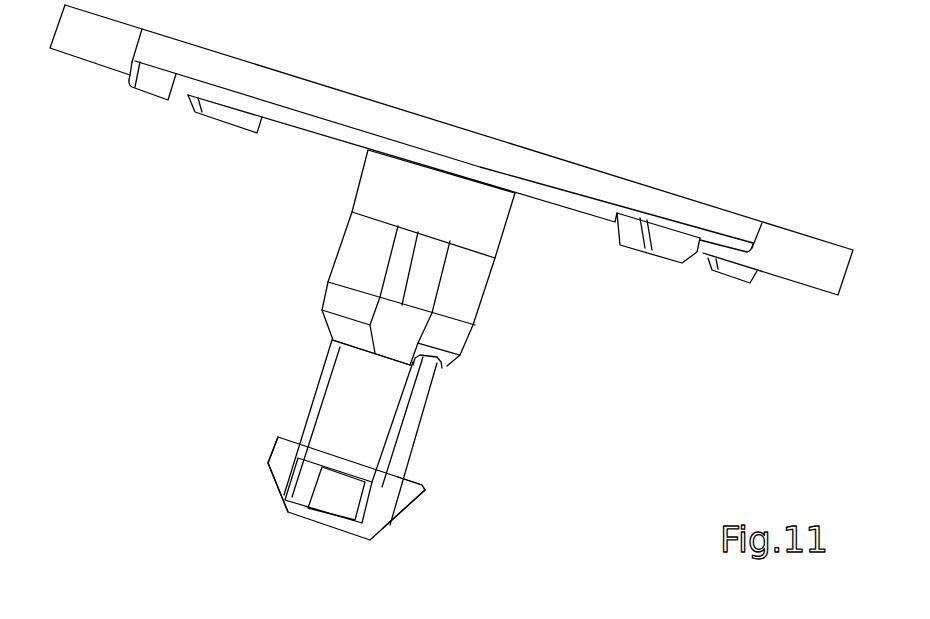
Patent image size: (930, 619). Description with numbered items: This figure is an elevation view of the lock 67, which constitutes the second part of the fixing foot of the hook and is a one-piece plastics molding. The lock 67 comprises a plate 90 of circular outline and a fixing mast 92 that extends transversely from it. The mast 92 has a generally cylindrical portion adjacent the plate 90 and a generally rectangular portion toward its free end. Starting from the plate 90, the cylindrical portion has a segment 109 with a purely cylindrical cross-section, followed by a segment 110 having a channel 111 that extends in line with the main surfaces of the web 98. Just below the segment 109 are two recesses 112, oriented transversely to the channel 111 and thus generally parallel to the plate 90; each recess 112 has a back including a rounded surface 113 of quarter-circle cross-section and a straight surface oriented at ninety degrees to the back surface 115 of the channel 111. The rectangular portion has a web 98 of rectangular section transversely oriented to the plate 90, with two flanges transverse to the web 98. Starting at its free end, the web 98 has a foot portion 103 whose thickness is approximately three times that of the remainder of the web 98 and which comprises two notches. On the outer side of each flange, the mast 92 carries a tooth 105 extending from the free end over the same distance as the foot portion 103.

The plate 90 is at (533, 150).
The lock 67 is at (143, 114).
The segment 109 is at (378, 181).
The segment 110 is at (441, 277).
The back surface 115 is at (400, 262).
The rounded surface 113 is at (434, 257).
The recess 112 is at (470, 276).
The channel 111 is at (393, 311).
The web 98 is at (345, 400).
The tooth 105 is at (285, 455).
The foot portion 103 is at (414, 536).
The fixing mast 92 is at (481, 416).